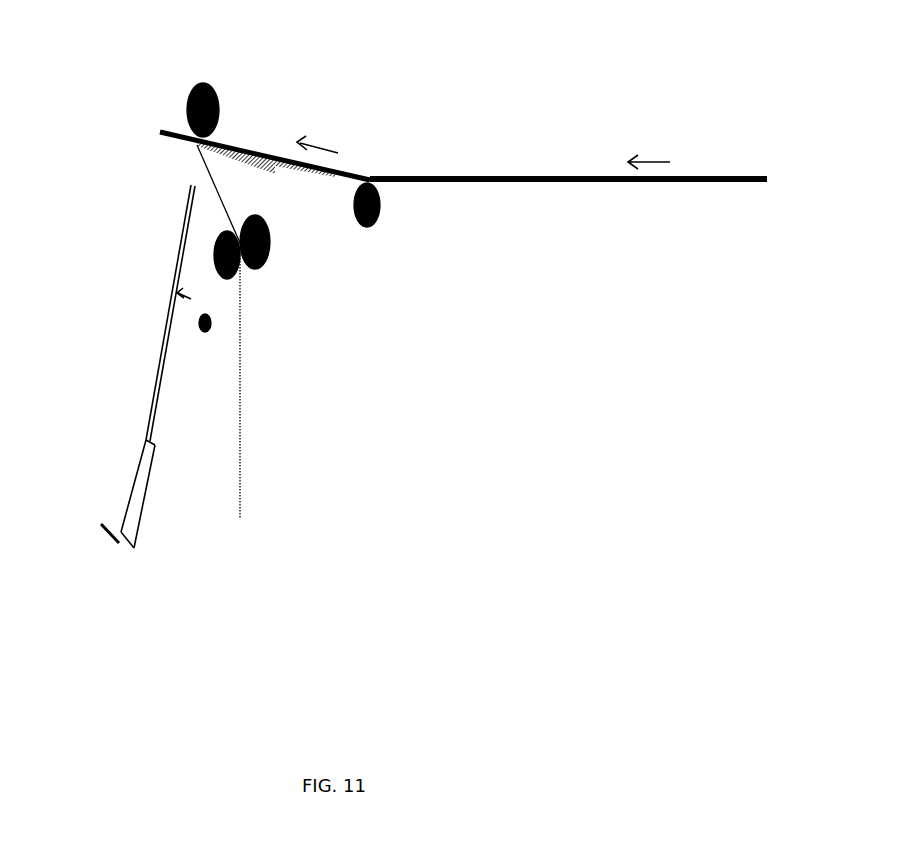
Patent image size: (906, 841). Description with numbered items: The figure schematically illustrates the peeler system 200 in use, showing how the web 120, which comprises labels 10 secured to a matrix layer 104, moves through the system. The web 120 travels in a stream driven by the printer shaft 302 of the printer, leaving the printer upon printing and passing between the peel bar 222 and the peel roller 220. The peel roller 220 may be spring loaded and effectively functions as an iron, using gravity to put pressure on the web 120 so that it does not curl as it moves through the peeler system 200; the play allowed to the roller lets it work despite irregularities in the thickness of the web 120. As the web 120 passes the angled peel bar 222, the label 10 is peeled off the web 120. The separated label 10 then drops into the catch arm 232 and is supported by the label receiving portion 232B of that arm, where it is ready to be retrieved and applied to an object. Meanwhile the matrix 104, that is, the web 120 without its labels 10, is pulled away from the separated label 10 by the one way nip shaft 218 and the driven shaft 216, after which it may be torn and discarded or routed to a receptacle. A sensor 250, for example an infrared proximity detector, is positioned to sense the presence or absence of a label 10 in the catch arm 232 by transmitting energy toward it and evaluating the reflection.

The peeler system 200 is at (114, 204).
The peel roller 220 is at (197, 82).
The peel bar 222 is at (260, 173).
The web 120 is at (733, 170).
The printer shaft 302 is at (377, 220).
The one way nip shaft 218 is at (215, 262).
The driven shaft 216 is at (262, 270).
The matrix layer 104 is at (240, 438).
The sensor 250 is at (200, 315).
The catch arm 232 is at (157, 499).
The label 10 is at (128, 458).
The label receiving portion 232B is at (115, 542).